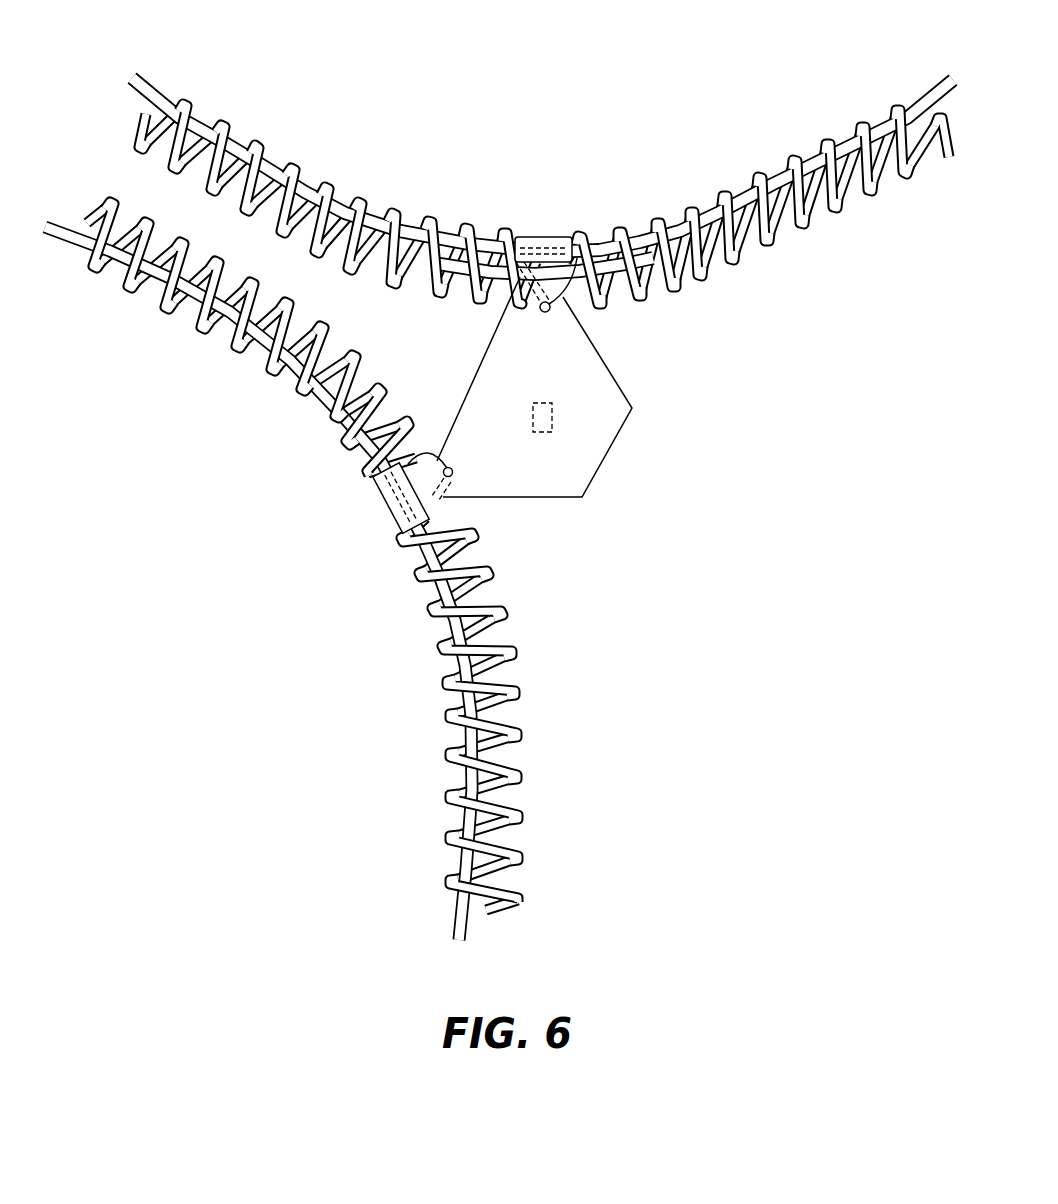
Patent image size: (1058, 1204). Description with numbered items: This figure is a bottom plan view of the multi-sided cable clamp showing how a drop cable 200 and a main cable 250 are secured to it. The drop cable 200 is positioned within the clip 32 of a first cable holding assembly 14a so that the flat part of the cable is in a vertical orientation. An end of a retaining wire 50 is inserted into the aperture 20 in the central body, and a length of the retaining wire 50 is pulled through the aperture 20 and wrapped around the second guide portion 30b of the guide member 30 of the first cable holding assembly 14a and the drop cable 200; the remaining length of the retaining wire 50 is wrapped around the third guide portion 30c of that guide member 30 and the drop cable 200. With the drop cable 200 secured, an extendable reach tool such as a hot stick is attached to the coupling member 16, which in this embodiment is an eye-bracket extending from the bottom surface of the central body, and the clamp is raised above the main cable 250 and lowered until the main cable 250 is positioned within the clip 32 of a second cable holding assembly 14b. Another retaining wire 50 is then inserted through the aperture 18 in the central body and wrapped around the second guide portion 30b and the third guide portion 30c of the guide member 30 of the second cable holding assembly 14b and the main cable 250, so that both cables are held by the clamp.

The drop cable 200 is at (914, 100).
The main cable 250 is at (456, 904).
The retaining wire 50 is at (720, 206).
The first cable holding assembly 14a is at (492, 220).
The second cable holding assembly 14b is at (383, 566).
The clip 32 is at (541, 230).
The guide member 30 is at (503, 292).
The second guide portion 30b is at (455, 298).
The third guide portion 30c is at (622, 294).
The aperture 20 is at (544, 313).
The aperture 18 is at (453, 468).
The coupling member 16 is at (555, 412).